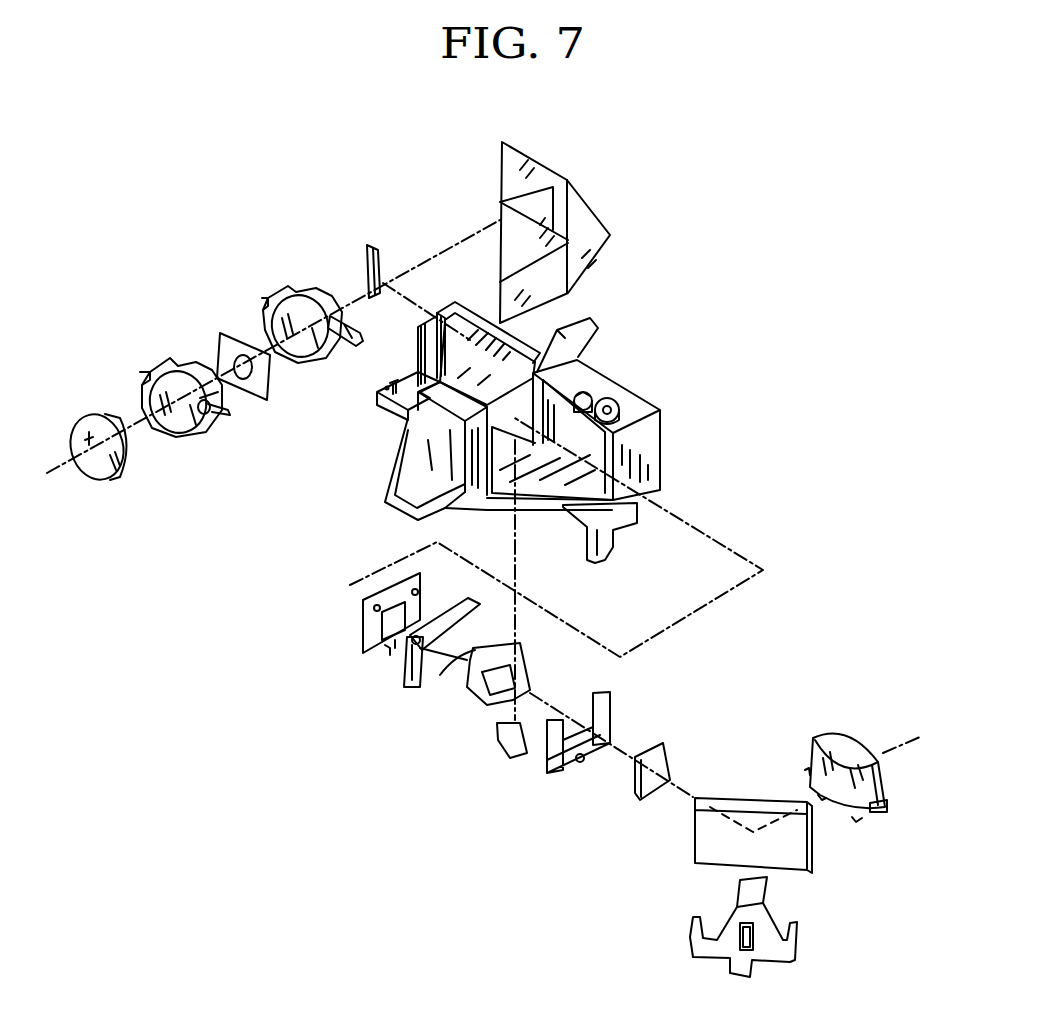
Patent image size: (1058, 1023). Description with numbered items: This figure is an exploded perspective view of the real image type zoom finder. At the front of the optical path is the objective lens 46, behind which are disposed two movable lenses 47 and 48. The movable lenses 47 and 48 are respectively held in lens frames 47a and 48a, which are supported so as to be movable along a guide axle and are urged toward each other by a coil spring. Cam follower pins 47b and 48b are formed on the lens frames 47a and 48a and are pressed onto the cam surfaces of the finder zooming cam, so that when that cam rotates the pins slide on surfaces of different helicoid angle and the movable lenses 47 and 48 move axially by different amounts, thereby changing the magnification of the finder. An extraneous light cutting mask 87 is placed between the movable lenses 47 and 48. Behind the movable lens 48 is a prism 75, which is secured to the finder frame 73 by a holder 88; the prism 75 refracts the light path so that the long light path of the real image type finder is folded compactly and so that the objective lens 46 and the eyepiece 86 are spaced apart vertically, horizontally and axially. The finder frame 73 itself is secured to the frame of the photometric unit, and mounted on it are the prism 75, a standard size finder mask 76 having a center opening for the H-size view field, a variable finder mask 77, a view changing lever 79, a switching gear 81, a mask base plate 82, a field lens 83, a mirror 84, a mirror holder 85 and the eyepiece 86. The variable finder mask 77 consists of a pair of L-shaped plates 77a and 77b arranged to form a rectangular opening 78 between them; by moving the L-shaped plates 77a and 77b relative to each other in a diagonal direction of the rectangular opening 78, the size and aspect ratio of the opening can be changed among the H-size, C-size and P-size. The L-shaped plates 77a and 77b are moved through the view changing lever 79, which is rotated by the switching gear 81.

The objective lens 46 is at (100, 483).
The movable lens 47 is at (170, 440).
The lens frame 47a is at (190, 357).
The cam follower pin 47b is at (226, 423).
The movable lens 48 is at (292, 368).
The lens frame 48a is at (335, 292).
The cam follower pin 48b is at (348, 368).
The finder frame 73 is at (617, 368).
The prism 75 is at (578, 192).
The standard size finder mask 76 is at (365, 632).
The variable finder mask 77 is at (408, 637).
The L-shaped plate 77a is at (453, 625).
The L-shaped plate 77b is at (435, 685).
The rectangular opening 78 is at (528, 582).
The view changing lever 79 is at (478, 705).
The switching gear 81 is at (503, 772).
The mask base plate 82 is at (565, 778).
The field lens 83 is at (637, 800).
The mirror 84 is at (755, 800).
The mirror holder 85 is at (690, 935).
The eyepiece 86 is at (830, 735).
The extraneous light cutting mask 87 is at (243, 327).
The holder 88 is at (376, 248).